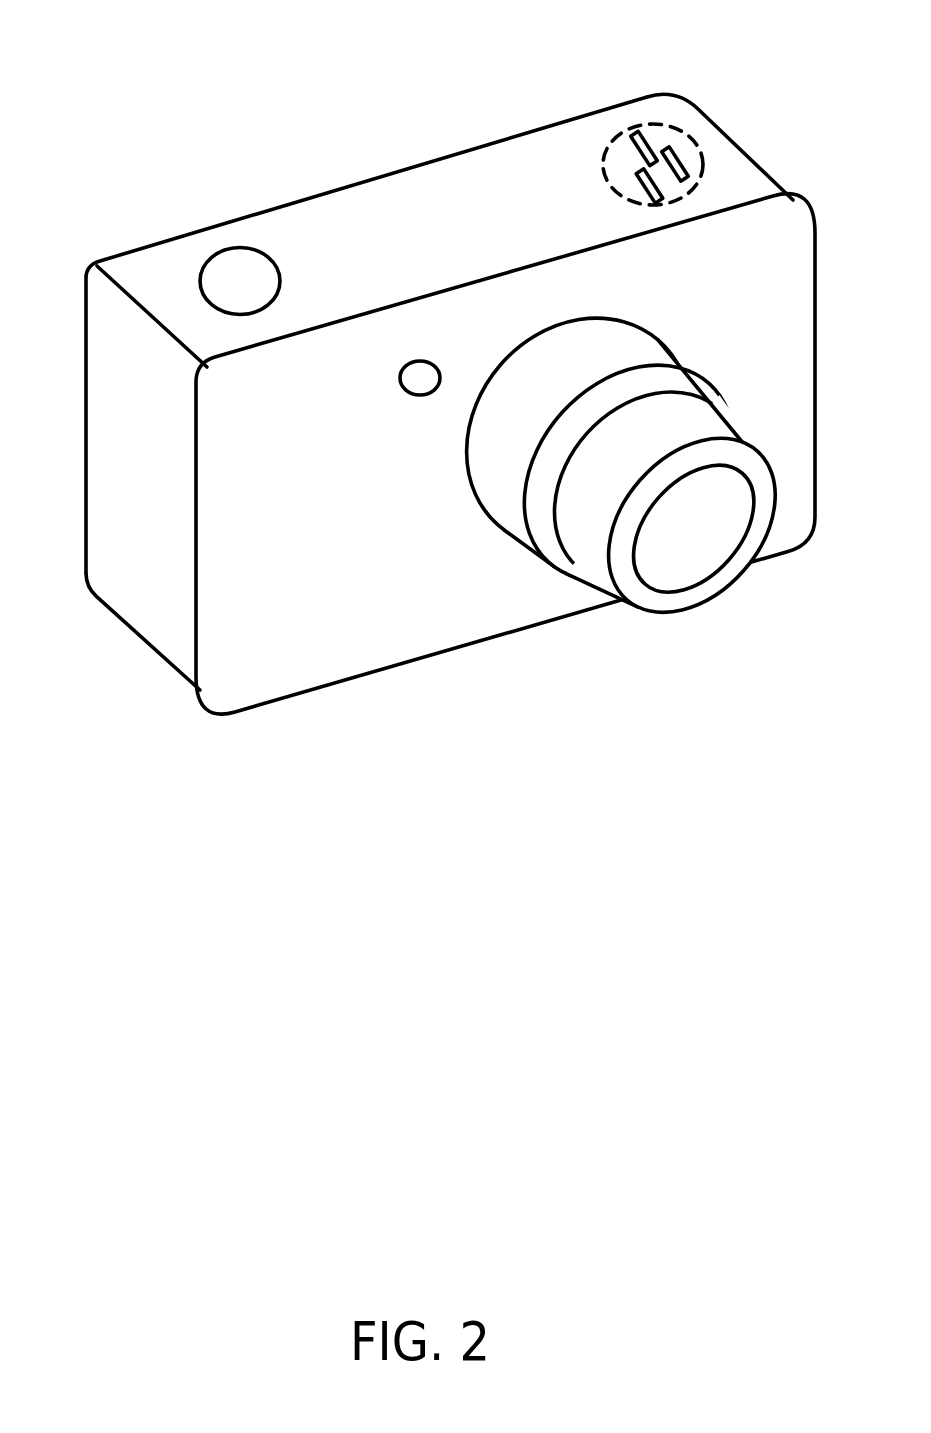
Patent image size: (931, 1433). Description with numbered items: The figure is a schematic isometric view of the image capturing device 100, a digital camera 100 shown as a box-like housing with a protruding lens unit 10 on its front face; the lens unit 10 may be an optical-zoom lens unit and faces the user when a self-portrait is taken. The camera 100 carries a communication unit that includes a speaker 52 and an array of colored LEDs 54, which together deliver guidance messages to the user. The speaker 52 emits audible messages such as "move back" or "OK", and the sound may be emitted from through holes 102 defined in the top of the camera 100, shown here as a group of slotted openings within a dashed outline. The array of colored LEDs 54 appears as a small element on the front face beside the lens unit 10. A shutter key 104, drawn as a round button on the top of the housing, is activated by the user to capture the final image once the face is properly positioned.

The image capturing device 100 is at (221, 103).
The lens unit 10 is at (750, 408).
The speaker 52 is at (613, 141).
The array of colored LEDs 54 is at (418, 383).
The through holes 102 is at (670, 153).
The shutter key 104 is at (243, 272).